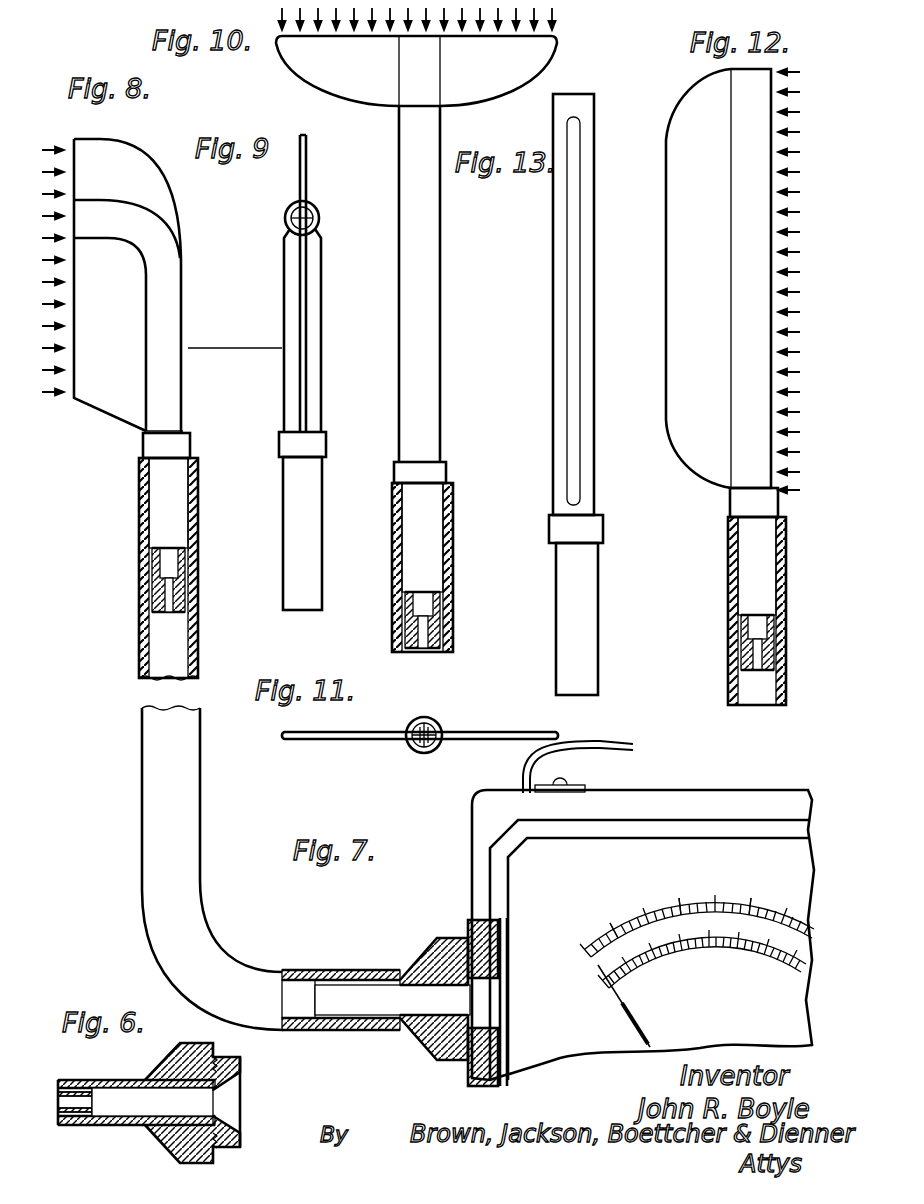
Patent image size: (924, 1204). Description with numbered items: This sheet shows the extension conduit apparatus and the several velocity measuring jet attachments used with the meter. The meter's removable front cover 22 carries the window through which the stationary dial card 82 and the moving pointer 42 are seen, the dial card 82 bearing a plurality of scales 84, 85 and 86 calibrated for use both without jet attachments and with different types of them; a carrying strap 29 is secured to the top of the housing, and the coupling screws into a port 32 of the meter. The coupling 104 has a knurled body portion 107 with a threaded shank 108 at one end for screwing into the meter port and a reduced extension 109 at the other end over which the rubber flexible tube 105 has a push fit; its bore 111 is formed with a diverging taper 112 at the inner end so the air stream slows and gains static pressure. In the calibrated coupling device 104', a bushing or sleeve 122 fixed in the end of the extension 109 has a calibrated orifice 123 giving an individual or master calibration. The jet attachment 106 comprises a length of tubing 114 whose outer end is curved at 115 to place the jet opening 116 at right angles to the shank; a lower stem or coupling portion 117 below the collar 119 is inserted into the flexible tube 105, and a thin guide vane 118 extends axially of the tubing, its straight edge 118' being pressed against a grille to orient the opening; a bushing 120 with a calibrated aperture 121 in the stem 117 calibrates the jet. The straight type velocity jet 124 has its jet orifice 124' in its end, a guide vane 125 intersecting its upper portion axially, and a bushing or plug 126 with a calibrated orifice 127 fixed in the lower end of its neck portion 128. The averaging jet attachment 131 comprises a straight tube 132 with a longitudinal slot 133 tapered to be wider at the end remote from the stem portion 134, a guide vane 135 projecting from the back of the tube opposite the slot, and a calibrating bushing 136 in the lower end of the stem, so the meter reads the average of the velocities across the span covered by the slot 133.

In FIG. 7, the front cover 22 is at (472, 806).
In FIG. 7, the carrying strap 29 is at (633, 746).
In FIG. 7, the connection 32 is at (478, 1086).
In FIG. 7, the pointer 42 is at (648, 1038).
In FIG. 7, the dial card 82 is at (596, 856).
In FIG. 7, the scale 84 is at (636, 912).
In FIG. 7, the scale 85 is at (692, 910).
In FIG. 7, the scale 86 is at (764, 910).
In FIG. 7, the coupling 104 is at (416, 990).
In FIG. 6, the calibrated coupling device 104' is at (185, 1095).
In FIG. 8, the flexible tube 105 is at (140, 650).
In FIG. 10, the flexible tube 105 is at (394, 637).
In FIG. 12, the flexible tube 105 is at (732, 688).
In FIG. 7, the flexible tube 105 is at (212, 922).
In FIG. 8, the jet attachment 106 is at (282, 348).
In FIG. 7, the knurled body portion 107 is at (466, 1064).
In FIG. 6, the knurled body portion 107 is at (186, 1156).
In FIG. 7, the threaded shank 108 is at (486, 950).
In FIG. 7, the reduced extension 109 is at (356, 1030).
In FIG. 6, the reduced extension 109 is at (124, 1126).
In FIG. 7, the bore 111 is at (420, 1002).
In FIG. 6, the bore 111 is at (112, 1100).
In FIG. 7, the diverging taper 112 is at (512, 1012).
In FIG. 6, the diverging taper 112 is at (236, 1110).
In FIG. 8, the tubing 114 is at (158, 430).
In FIG. 8, the curved portion 115 is at (118, 242).
In FIG. 8, the jet opening 116 is at (73, 219).
In FIG. 9, the jet opening 116 is at (286, 219).
In FIG. 8, the lower stem or coupling portion 117 is at (165, 506).
In FIG. 8, the guide vane 118 is at (94, 412).
In FIG. 8, the straight edge 118' is at (53, 138).
In FIG. 8, the collar 119 is at (182, 447).
In FIG. 8, the bushing 120 is at (192, 596).
In FIG. 8, the calibrated aperture 121 is at (172, 606).
In FIG. 6, the bushing or sleeve 122 is at (68, 1126).
In FIG. 6, the calibrated orifice 123 is at (58, 1092).
In FIG. 10, the straight type velocity jet 124 is at (450, 284).
In FIG. 11, the straight type velocity jet 124 is at (411, 745).
In FIG. 10, the jet orifice 124' is at (395, 70).
In FIG. 11, the jet orifice 124' is at (453, 750).
In FIG. 10, the guide vane 125 is at (476, 94).
In FIG. 11, the guide vane 125 is at (352, 740).
In FIG. 10, the bushing or plug 126 is at (432, 650).
In FIG. 10, the calibrated orifice 127 is at (422, 652).
In FIG. 10, the neck portion 128 is at (430, 555).
In FIG. 13, the averaging jet attachment 131 is at (610, 98).
In FIG. 12, the averaging jet attachment 131 is at (676, 88).
In FIG. 13, the straight tube 132 is at (596, 497).
In FIG. 13, the longitudinal slot 133 is at (578, 394).
In FIG. 13, the stem portion 134 is at (586, 608).
In FIG. 12, the stem portion 134 is at (748, 593).
In FIG. 12, the guide vane 135 is at (700, 464).
In FIG. 12, the calibrating bushing 136 is at (752, 698).